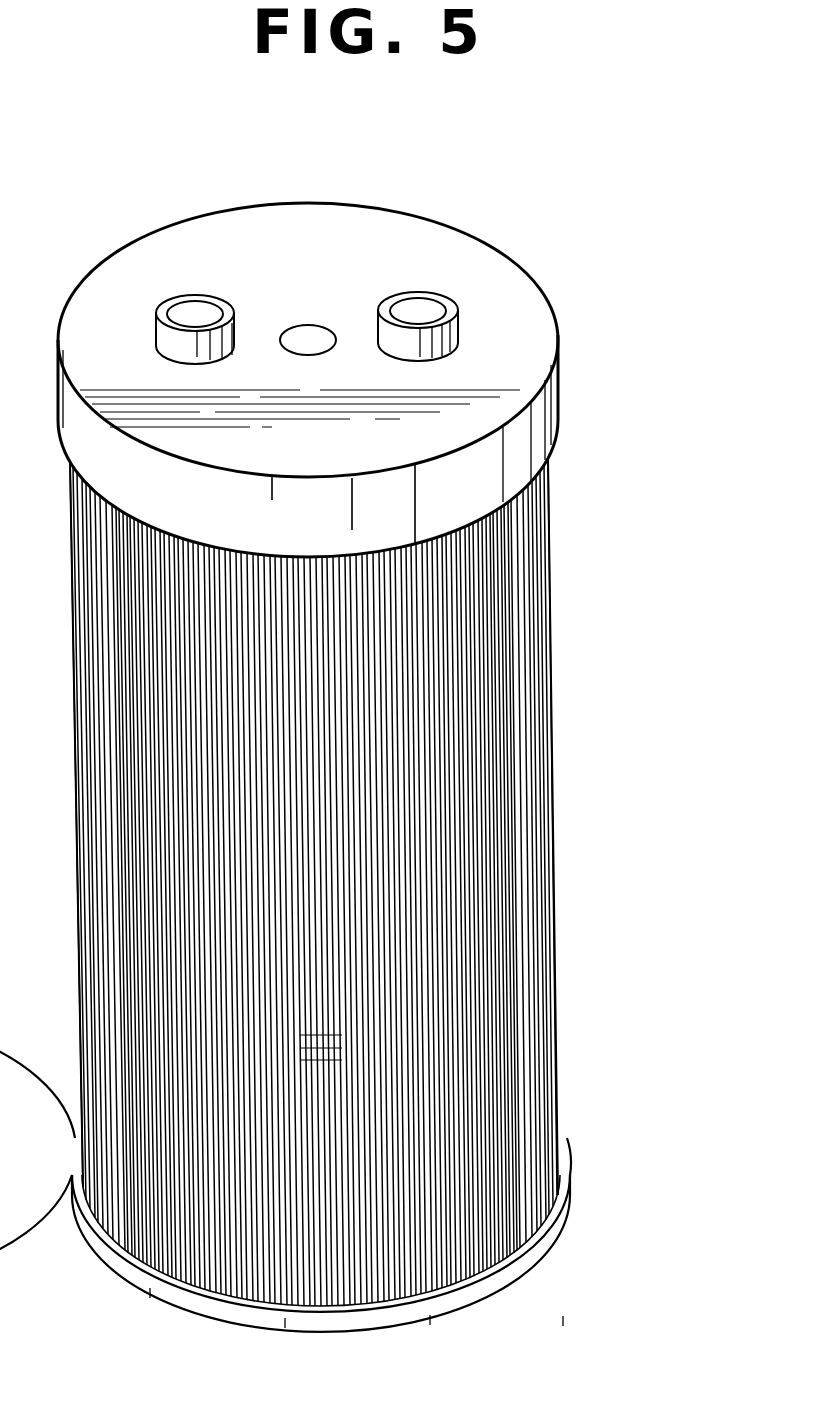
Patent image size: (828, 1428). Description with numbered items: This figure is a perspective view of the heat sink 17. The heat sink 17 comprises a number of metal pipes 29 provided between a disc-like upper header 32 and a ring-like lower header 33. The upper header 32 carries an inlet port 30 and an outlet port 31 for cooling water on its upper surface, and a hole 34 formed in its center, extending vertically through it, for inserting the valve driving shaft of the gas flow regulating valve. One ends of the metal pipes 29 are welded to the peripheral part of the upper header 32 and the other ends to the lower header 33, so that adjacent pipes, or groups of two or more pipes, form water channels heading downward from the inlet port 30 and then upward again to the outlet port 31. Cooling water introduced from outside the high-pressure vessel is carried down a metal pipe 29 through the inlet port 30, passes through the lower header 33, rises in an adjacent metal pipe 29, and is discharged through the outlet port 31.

The heat sink 17 is at (557, 497).
The metal pipes 29 is at (445, 652).
The inlet port 30 is at (418, 297).
The outlet port 31 is at (195, 298).
The upper header 32 is at (488, 323).
The lower header 33 is at (543, 1258).
The hole 34 is at (307, 337).